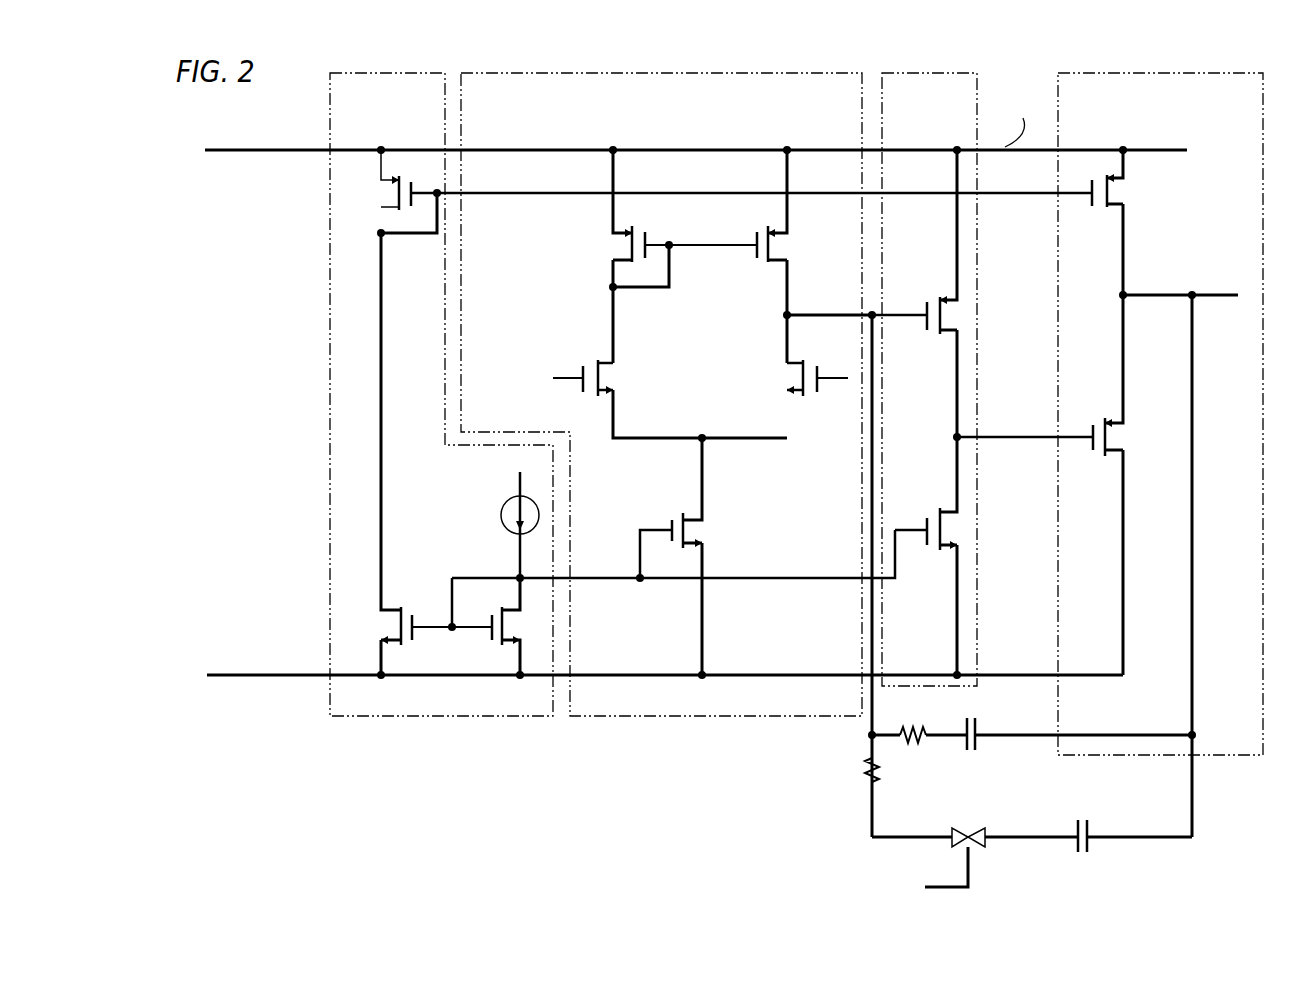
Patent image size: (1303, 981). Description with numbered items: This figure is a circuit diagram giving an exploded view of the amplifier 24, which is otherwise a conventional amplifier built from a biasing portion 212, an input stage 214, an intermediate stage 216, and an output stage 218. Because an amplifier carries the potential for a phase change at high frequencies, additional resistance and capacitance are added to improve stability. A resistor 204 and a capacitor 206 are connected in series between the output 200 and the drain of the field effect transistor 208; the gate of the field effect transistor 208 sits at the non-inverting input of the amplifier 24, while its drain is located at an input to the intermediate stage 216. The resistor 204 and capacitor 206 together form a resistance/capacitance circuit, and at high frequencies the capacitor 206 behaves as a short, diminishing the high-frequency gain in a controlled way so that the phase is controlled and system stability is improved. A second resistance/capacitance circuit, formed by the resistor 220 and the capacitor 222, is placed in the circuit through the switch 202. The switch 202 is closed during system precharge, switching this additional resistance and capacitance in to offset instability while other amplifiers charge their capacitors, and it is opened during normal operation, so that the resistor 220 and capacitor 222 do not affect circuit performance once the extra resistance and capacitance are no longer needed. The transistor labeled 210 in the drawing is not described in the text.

The amplifier 24 is at (247, 291).
The output 200 is at (1213, 299).
The switch 202 is at (967, 858).
The resistor 204 is at (925, 738).
The capacitor 206 is at (975, 750).
The field effect transistor 208 is at (812, 395).
The N input transistor 210 is at (588, 360).
The biasing portion 212 is at (375, 72).
The input stage 214 is at (673, 377).
The intermediate stage 216 is at (905, 69).
The output stage 218 is at (1160, 435).
The resistor 220 is at (868, 786).
The capacitor 222 is at (1090, 847).